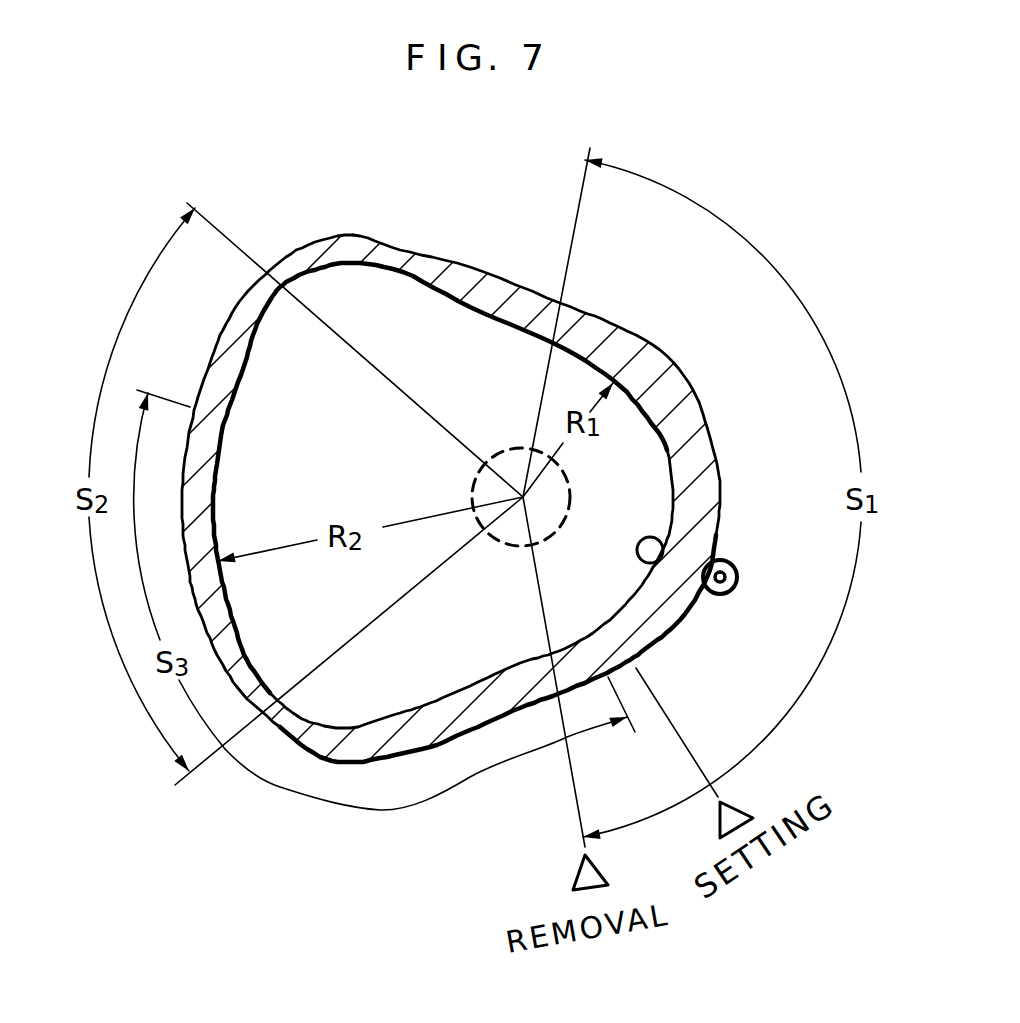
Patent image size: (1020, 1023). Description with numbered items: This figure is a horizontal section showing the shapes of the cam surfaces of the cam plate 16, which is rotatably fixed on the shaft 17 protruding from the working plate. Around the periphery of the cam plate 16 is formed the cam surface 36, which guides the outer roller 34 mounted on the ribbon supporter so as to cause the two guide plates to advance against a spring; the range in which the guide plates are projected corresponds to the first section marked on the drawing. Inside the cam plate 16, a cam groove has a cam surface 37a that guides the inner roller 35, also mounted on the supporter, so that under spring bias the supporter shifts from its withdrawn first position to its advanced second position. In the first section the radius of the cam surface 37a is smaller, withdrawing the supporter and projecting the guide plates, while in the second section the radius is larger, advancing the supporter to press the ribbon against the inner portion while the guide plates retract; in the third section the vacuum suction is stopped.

The cam plate 16 is at (430, 749).
The shaft 17 is at (573, 483).
The outer roller 34 is at (720, 595).
The inner roller 35 is at (637, 550).
The cam surface 36 is at (703, 413).
The cam surface 37a is at (477, 684).